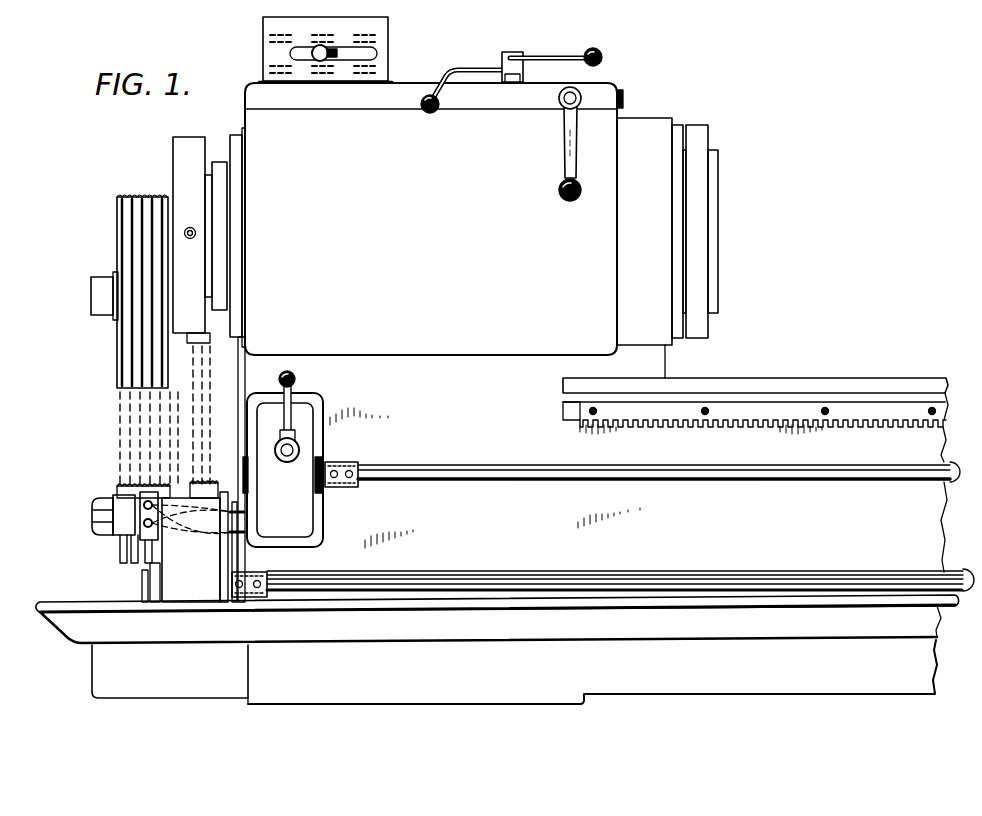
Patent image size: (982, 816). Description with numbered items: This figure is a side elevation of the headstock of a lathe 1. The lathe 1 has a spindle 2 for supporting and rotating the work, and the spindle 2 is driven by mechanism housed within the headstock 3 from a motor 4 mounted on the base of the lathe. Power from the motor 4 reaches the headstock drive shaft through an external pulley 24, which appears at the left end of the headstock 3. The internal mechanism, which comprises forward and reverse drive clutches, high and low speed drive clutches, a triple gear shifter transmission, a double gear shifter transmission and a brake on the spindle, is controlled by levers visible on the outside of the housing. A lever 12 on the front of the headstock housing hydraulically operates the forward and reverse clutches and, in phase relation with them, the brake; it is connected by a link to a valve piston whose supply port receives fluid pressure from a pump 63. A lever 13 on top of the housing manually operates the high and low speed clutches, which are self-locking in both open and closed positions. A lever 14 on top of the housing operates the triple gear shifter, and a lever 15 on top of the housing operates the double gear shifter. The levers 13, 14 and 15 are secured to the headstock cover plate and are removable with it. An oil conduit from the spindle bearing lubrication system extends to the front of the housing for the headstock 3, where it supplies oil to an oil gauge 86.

The lathe 1 is at (800, 375).
The spindle 2 is at (719, 243).
The headstock 3 is at (647, 118).
The motor 4 is at (239, 447).
The lever 12 is at (562, 153).
The lever 13 is at (546, 51).
The lever 14 is at (319, 59).
The lever 15 is at (452, 66).
The external pulley 24 is at (116, 223).
The pump 63 is at (106, 493).
The oil gauge 86 is at (626, 86).